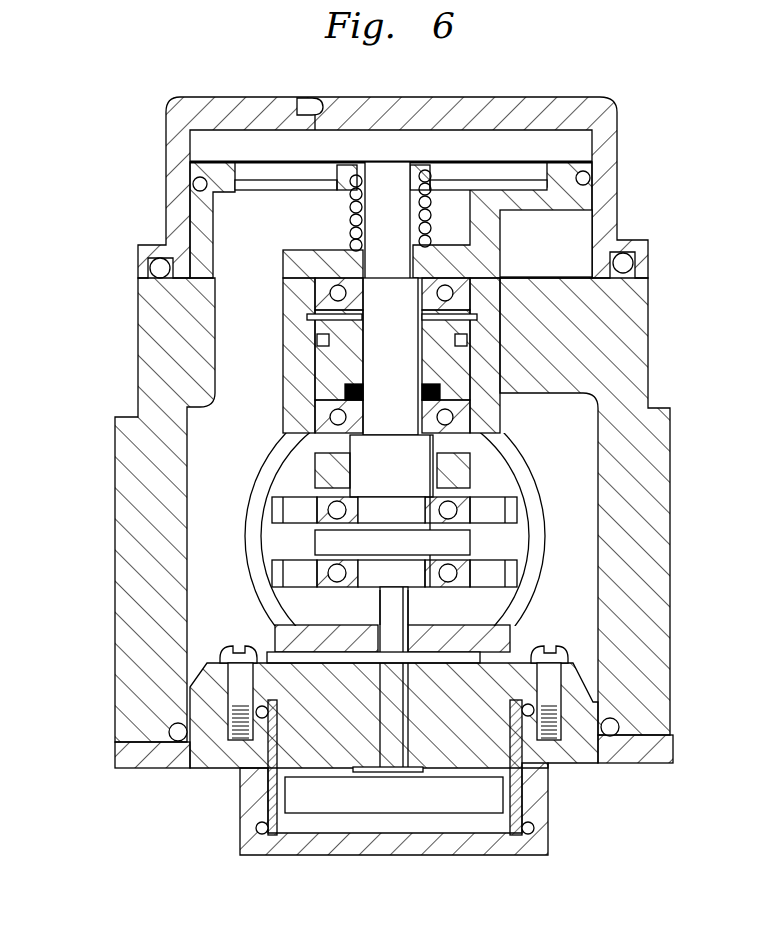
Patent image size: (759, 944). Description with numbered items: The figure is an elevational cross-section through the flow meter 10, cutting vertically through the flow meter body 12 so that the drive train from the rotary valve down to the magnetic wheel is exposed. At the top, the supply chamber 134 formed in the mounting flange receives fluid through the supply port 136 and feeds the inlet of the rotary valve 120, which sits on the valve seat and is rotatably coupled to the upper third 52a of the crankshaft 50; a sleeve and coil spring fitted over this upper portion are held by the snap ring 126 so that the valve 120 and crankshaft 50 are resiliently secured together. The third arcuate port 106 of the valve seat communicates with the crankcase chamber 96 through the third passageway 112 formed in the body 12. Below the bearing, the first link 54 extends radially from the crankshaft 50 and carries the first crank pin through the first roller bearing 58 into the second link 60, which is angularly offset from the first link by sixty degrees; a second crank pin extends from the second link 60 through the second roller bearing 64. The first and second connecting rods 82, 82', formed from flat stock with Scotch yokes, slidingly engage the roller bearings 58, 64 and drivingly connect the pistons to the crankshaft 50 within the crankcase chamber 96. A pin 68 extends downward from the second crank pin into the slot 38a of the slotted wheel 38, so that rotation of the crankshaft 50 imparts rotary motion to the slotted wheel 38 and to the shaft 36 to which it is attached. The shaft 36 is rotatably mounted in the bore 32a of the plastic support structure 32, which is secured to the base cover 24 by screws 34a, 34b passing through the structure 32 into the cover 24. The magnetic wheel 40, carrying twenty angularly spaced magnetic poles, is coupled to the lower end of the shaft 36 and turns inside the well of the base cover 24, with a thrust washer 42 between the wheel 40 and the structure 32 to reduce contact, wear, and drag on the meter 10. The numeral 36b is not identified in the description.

The flow meter 10 is at (180, 54).
The flow meter body 12 is at (138, 338).
The base cover 24 is at (236, 831).
The support structure 32 is at (473, 723).
The bore 32a is at (386, 746).
The screw 34a is at (232, 648).
The screw 34b is at (553, 648).
The shaft 36 is at (388, 718).
The shaft shoulder plate 36b is at (362, 662).
The slotted wheel 38 is at (318, 625).
The slot 38a is at (412, 625).
The magnetic wheel 40 is at (487, 806).
The thrust washer 42 is at (352, 779).
The crankshaft 50 is at (403, 362).
The upper third of upper shaft portion 52a is at (377, 213).
The first link 54 is at (316, 470).
The first roller bearing 58 is at (468, 490).
The second link 60 is at (315, 543).
The second roller bearing 64 is at (470, 588).
The pin 68 is at (380, 601).
The first connecting rod 82 is at (425, 503).
The second connecting rod 82' is at (428, 577).
The crankcase chamber 96 is at (228, 515).
The third arcuate port 106 is at (250, 278).
The third passageway 112 is at (268, 334).
The rotary valve 120 is at (502, 232).
The snap ring 126 is at (435, 173).
The supply chamber 134 is at (408, 153).
The supply port 136 is at (317, 97).